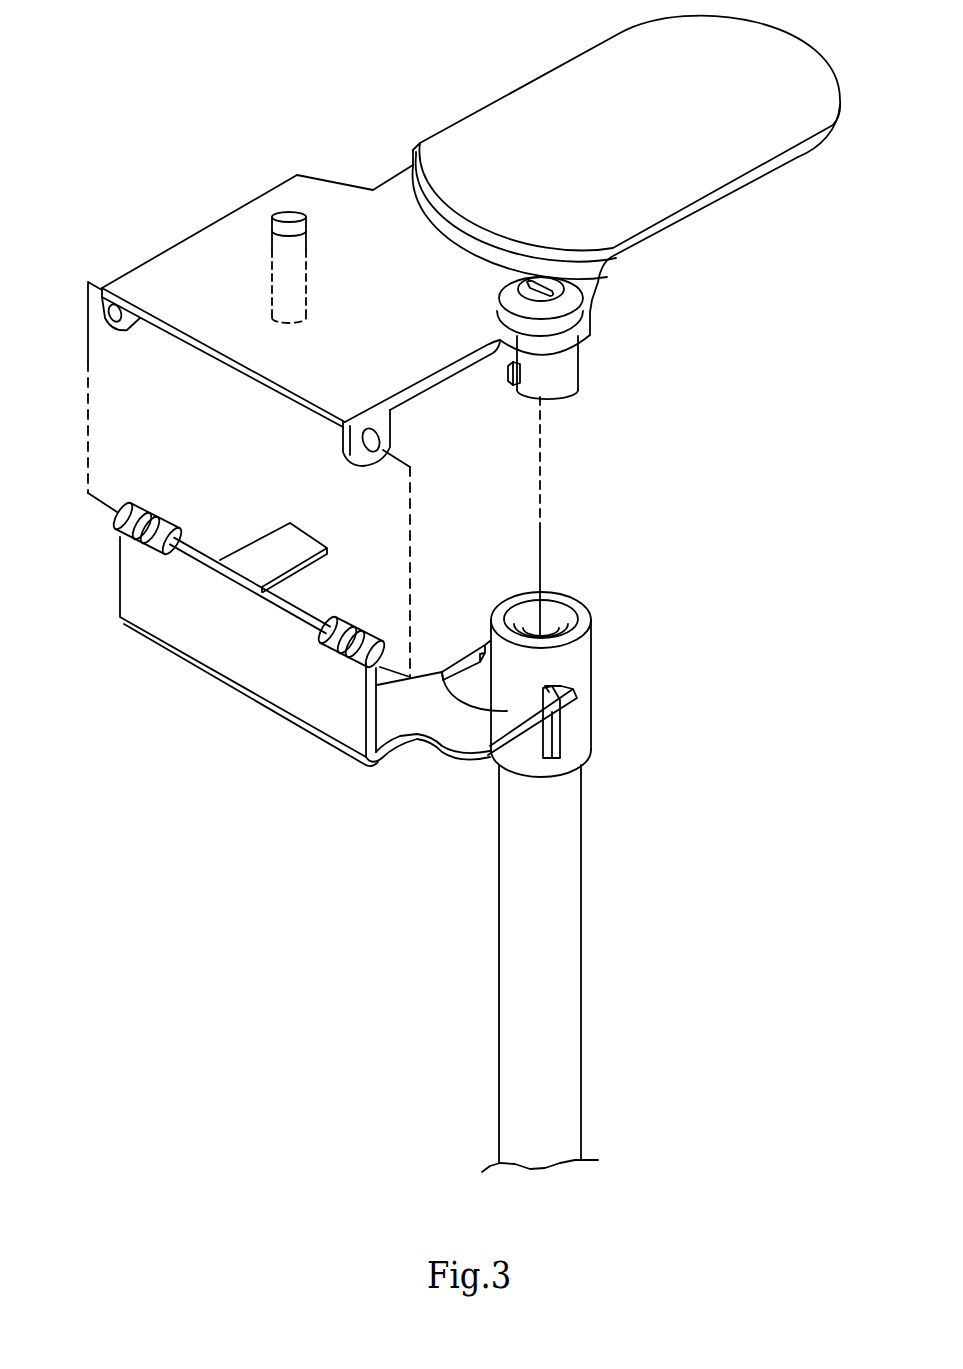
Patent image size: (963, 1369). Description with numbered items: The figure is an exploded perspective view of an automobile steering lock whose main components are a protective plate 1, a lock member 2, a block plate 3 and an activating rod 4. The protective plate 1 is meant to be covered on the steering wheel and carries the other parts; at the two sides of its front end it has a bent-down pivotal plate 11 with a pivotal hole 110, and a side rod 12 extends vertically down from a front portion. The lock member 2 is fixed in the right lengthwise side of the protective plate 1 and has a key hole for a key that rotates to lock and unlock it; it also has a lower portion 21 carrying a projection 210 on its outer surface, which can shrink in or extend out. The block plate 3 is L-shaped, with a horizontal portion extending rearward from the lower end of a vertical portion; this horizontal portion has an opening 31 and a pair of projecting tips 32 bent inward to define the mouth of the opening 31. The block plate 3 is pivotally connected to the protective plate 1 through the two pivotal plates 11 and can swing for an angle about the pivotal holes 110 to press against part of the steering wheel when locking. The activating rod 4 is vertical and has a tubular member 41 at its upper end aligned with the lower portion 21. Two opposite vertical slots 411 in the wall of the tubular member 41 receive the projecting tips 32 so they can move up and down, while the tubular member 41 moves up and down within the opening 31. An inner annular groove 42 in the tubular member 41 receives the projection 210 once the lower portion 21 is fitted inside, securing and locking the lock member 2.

The protective plate 1 is at (470, 95).
The pivotal plate 11 is at (107, 312).
The side rod 12 is at (270, 240).
The pivotal hole 110 is at (385, 440).
The lock member 2 is at (591, 312).
The lower portion 21 is at (576, 373).
The projection 210 is at (506, 385).
The block plate 3 is at (274, 703).
The opening 31 is at (460, 685).
The projecting tips 32 is at (480, 637).
The activating rod 4 is at (592, 907).
The tubular member 41 is at (593, 662).
The inner annular groove 42 is at (557, 620).
The vertical slots 411 is at (558, 737).